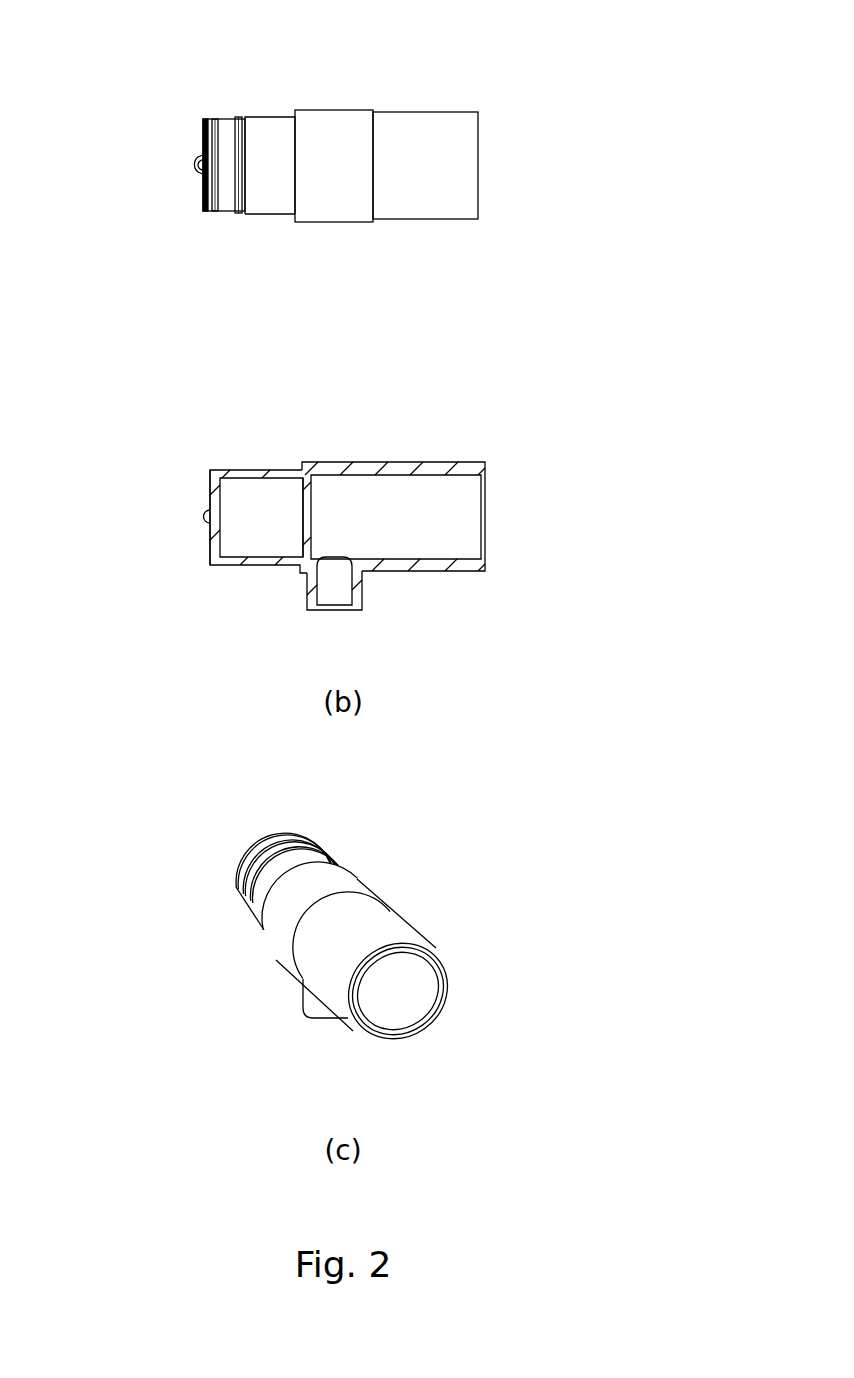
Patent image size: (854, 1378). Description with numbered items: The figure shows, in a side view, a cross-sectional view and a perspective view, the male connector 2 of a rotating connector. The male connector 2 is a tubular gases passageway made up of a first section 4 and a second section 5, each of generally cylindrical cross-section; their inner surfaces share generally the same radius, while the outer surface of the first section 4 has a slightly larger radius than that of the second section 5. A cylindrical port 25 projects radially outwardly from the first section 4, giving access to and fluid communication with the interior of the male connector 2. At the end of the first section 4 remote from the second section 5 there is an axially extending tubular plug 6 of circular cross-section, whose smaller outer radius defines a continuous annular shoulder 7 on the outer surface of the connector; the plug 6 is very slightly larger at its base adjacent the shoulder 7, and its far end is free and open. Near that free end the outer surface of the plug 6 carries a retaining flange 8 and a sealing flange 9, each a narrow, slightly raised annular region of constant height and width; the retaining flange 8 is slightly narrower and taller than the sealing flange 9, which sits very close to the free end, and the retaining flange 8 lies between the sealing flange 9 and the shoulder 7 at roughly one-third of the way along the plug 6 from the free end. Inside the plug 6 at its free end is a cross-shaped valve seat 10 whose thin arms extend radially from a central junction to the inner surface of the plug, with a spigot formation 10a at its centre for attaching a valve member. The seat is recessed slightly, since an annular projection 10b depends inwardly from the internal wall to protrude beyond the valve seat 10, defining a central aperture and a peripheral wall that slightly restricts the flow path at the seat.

The male connector 2 is at (510, 92).
The first section 4 is at (357, 128).
The second section 5 is at (420, 197).
The tubular plug 6 is at (268, 197).
The continuous annular shoulder 7 is at (293, 110).
The retaining flange 8 is at (243, 112).
The sealing flange 9 is at (220, 212).
The cross-shaped valve seat 10 is at (190, 162).
The spigot formation 10a is at (200, 518).
The annular projection 10b is at (210, 480).
The cylindrical port 25 is at (365, 594).